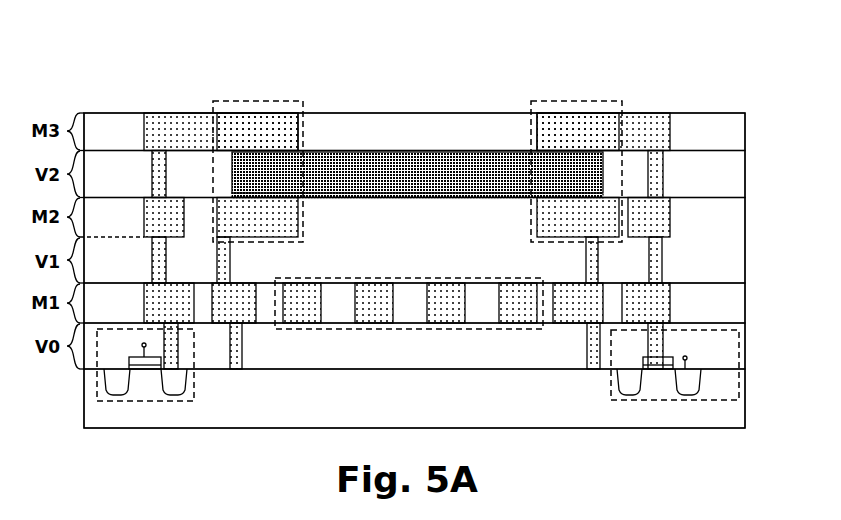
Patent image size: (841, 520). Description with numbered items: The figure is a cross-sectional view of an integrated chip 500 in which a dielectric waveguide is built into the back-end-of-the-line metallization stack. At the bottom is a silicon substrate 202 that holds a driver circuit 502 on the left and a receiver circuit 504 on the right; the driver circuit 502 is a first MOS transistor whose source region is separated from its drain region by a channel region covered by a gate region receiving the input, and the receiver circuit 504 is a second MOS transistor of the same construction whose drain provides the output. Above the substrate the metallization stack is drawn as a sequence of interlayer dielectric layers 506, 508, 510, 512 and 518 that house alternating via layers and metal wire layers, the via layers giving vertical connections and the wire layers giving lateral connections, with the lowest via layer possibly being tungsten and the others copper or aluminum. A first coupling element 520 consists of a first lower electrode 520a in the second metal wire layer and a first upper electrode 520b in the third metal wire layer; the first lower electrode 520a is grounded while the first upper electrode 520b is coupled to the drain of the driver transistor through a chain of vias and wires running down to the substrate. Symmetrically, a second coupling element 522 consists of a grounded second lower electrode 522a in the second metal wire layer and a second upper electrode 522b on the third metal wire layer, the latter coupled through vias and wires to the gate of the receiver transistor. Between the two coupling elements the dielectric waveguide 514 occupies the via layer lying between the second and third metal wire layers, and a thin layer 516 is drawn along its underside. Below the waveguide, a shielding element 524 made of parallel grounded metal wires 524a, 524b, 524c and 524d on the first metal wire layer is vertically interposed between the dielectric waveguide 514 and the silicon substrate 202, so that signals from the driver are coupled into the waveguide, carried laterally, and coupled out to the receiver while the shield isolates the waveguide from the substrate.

The integrated chip 500 is at (106, 46).
The silicon substrate 202 is at (745, 399).
The driver circuit 502 is at (194, 383).
The receiver circuit 504 is at (611, 386).
The first dielectric layer (V0 level) 506 is at (745, 349).
The second dielectric layer (M1 level) 508 is at (745, 303).
The third dielectric layer (V1/M2 level) 510 is at (745, 238).
The fourth dielectric layer (V2 level) 512 is at (745, 171).
The fifth dielectric layer (M3 level) 518 is at (745, 129).
The dielectric waveguide 514 is at (402, 152).
The capacitor dielectric 516 is at (402, 198).
The first coupling element 520 is at (290, 101).
The first lower electrode 520a is at (303, 215).
The first upper electrode 520b is at (303, 127).
The second coupling element 522 is at (610, 101).
The second lower electrode 522a is at (532, 221).
The second upper electrode 522b is at (532, 131).
The shielding element 524 is at (493, 329).
The grounded metal wire 524a is at (302, 283).
The grounded metal wire 524b is at (375, 283).
The grounded metal wire 524c is at (448, 283).
The grounded metal wire 524d is at (520, 283).